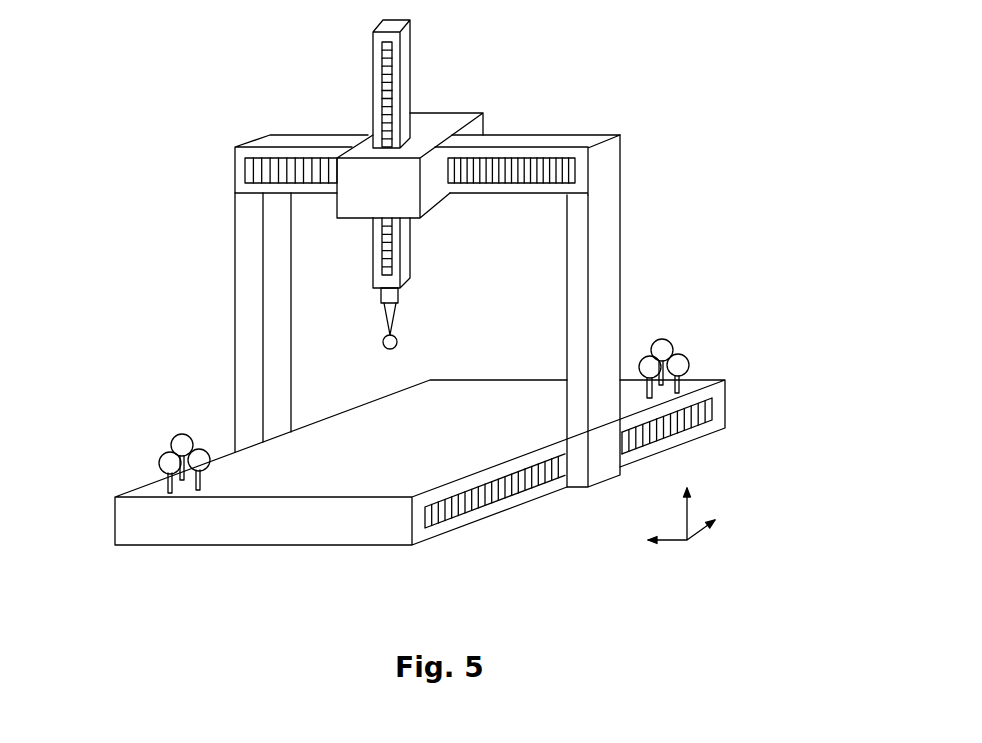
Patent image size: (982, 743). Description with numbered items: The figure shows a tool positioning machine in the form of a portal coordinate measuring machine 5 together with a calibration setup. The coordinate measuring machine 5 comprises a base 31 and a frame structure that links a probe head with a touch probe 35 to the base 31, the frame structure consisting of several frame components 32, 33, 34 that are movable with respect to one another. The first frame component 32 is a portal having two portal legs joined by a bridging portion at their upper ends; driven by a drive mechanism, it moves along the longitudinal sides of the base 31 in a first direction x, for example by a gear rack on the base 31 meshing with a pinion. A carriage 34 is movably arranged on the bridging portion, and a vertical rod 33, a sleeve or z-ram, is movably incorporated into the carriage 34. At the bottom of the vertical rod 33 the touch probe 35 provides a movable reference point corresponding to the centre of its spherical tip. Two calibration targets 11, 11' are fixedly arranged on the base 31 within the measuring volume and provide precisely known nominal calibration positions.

The portal coordinate measuring machine 5 is at (607, 68).
The calibration target 11 is at (162, 446).
The calibration target 11' is at (702, 351).
The base 31 is at (378, 420).
The frame component 32 is at (608, 232).
The vertical rod 33 is at (403, 255).
The carriage 34 is at (430, 127).
The touch probe 35 is at (378, 326).